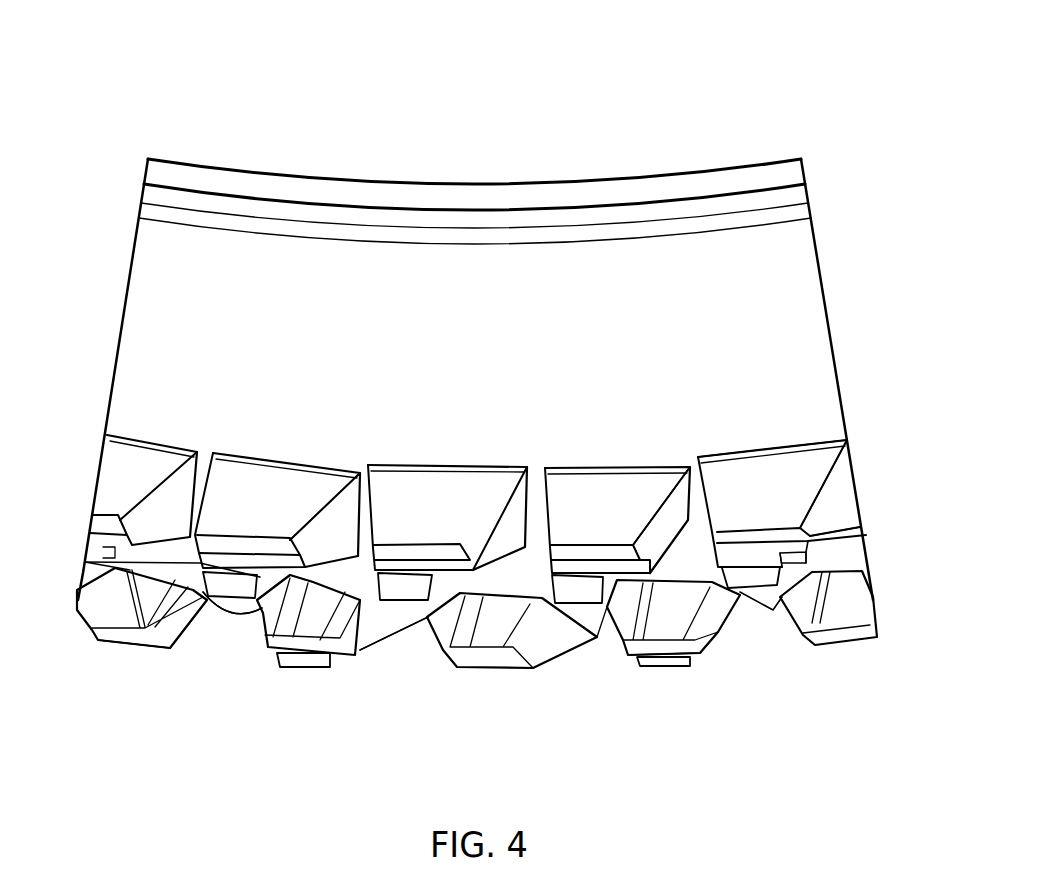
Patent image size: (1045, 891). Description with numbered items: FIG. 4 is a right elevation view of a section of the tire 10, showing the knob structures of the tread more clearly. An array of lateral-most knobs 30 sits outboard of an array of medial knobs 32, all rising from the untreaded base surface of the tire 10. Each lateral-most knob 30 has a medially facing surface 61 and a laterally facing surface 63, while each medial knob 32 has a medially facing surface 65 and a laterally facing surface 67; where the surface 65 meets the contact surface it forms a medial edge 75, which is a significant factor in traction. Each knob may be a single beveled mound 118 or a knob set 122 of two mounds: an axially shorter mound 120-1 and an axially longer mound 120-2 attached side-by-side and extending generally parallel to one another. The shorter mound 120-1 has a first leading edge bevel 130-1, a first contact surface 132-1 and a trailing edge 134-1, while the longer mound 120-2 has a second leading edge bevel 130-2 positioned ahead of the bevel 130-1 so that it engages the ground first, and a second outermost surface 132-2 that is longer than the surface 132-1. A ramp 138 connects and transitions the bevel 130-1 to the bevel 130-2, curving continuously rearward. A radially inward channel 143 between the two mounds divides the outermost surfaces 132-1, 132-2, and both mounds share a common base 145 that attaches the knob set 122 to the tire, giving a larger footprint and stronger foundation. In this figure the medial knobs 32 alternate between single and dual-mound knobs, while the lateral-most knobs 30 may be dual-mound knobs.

The tire 10 is at (58, 70).
The lateral-most knob 30 is at (582, 495).
The medial knob 32 is at (622, 671).
The medially facing surface 61 is at (207, 628).
The laterally facing surface 63 is at (800, 462).
The medially facing surface 65 is at (478, 673).
The laterally facing surface 67 is at (282, 657).
The medial edge 75 is at (158, 650).
The single beveled mound 118 is at (132, 637).
The axially shorter mound 120-1 is at (657, 665).
The axially longer mound 120-2 is at (702, 653).
The knob set 122 is at (297, 670).
The first leading edge bevel 130-1 is at (813, 560).
The second leading edge bevel 130-2 is at (832, 497).
The first contact surface 132-1 is at (787, 563).
The second outermost surface 132-2 is at (807, 530).
The trailing edge 134-1 is at (648, 562).
The ramp 138 is at (262, 590).
The channel 143 is at (98, 568).
The common base 145 is at (360, 500).